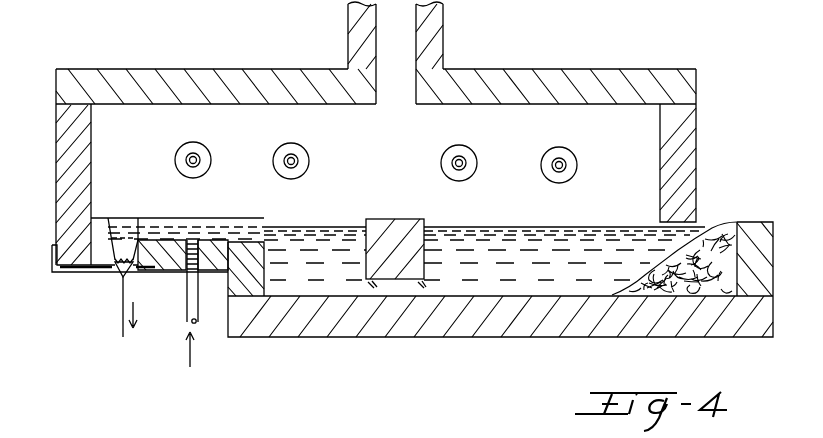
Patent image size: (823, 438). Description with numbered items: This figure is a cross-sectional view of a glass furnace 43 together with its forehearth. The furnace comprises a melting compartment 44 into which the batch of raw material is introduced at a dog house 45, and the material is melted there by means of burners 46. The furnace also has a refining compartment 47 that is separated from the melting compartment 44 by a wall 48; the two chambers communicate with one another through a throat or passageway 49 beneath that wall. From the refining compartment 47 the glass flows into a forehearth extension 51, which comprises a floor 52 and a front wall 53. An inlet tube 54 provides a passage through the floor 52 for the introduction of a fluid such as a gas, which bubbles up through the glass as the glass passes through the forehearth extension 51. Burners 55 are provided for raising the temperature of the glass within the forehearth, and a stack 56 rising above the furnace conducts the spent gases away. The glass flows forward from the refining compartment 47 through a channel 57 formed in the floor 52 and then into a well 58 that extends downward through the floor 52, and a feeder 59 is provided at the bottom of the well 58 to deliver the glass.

The glass furnace 43 is at (385, 355).
The melting compartment 44 is at (640, 173).
The dog house 45 is at (723, 222).
The burners 46 is at (459, 163).
The refining compartment 47 is at (316, 228).
The wall 48 is at (405, 219).
The throat 49 is at (404, 292).
The forehearth extension 51 is at (212, 242).
The floor 52 is at (214, 252).
The front wall 53 is at (92, 153).
The inlet tube 54 is at (188, 318).
The burners 55 is at (193, 160).
The stack 56 is at (446, 29).
The channel 57 is at (180, 222).
The well 58 is at (107, 243).
The feeder 59 is at (109, 272).